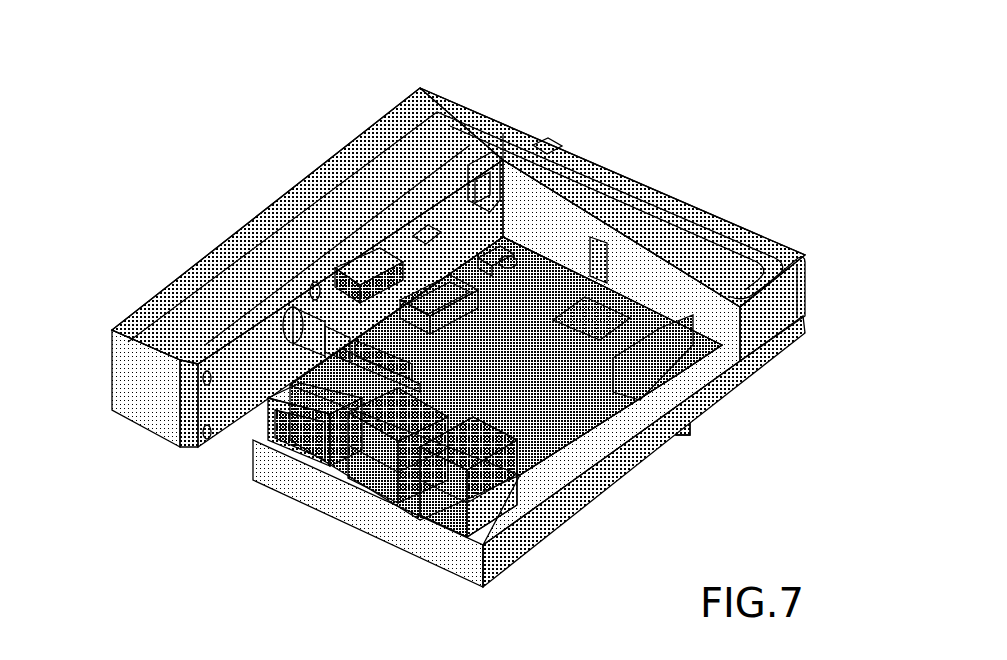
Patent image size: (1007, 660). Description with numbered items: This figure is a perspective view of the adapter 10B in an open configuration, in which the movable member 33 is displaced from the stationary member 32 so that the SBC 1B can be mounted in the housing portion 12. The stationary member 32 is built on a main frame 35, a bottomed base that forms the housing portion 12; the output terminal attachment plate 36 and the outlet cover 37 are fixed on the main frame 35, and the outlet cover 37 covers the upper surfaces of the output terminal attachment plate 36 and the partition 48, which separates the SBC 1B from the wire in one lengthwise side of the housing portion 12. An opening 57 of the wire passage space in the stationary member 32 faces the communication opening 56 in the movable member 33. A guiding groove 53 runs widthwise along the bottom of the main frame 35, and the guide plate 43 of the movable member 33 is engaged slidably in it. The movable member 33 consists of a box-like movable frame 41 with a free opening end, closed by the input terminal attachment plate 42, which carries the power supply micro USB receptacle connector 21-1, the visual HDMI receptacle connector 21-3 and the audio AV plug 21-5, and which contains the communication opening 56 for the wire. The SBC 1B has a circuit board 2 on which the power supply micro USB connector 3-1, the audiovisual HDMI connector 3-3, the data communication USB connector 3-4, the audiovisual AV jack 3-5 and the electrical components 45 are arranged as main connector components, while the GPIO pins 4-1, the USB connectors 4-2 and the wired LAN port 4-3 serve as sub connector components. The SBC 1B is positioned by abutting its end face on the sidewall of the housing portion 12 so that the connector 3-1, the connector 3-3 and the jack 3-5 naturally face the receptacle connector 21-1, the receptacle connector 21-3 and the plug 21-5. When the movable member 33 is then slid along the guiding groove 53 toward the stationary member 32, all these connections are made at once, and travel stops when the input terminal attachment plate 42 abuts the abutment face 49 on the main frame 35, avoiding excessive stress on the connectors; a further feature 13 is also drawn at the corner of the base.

The adapter 10B is at (390, 75).
The SBC 1B is at (671, 315).
The circuit board 2 is at (602, 298).
The power supply micro USB connector 3-1 is at (559, 288).
The audiovisual HDMI connector 3-3 is at (447, 281).
The data communication USB connector 3-4 is at (414, 525).
The audiovisual AV jack 3-5 is at (352, 346).
The GPIO pins 4-1 is at (685, 360).
The USB connector 4-2 is at (368, 478).
The wired LAN port 4-3 is at (263, 478).
The housing portion 12 is at (452, 567).
The base corner 13 is at (491, 567).
The power supply micro USB receptacle connector 21-1 is at (428, 230).
The visual HDMI receptacle connector 21-3 is at (372, 266).
The audio AV plug 21-5 is at (297, 305).
The stationary member 32 is at (818, 324).
The movable member 33 is at (138, 435).
The main frame 35 is at (568, 530).
The output terminal attachment plate 36 is at (760, 231).
The outlet cover 37 is at (716, 233).
The movable frame 41 is at (136, 402).
The input terminal attachment plate 42 is at (185, 429).
The guide plate 43 is at (413, 280).
The electrical components 45 is at (600, 318).
The partition 48 is at (716, 327).
The abutment face 49 is at (263, 430).
The guiding groove 53 is at (680, 432).
The communication opening 56 is at (469, 213).
The opening 57 is at (538, 152).